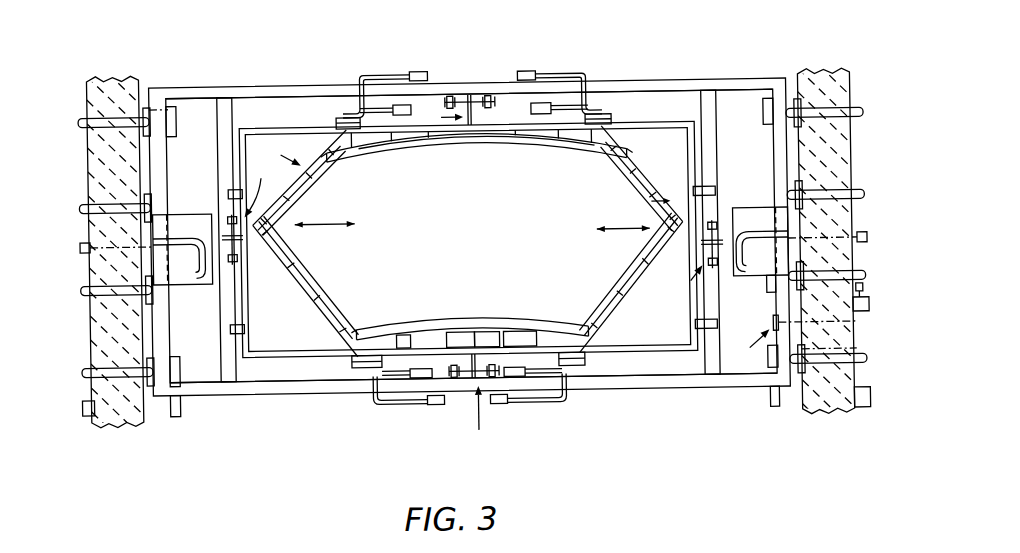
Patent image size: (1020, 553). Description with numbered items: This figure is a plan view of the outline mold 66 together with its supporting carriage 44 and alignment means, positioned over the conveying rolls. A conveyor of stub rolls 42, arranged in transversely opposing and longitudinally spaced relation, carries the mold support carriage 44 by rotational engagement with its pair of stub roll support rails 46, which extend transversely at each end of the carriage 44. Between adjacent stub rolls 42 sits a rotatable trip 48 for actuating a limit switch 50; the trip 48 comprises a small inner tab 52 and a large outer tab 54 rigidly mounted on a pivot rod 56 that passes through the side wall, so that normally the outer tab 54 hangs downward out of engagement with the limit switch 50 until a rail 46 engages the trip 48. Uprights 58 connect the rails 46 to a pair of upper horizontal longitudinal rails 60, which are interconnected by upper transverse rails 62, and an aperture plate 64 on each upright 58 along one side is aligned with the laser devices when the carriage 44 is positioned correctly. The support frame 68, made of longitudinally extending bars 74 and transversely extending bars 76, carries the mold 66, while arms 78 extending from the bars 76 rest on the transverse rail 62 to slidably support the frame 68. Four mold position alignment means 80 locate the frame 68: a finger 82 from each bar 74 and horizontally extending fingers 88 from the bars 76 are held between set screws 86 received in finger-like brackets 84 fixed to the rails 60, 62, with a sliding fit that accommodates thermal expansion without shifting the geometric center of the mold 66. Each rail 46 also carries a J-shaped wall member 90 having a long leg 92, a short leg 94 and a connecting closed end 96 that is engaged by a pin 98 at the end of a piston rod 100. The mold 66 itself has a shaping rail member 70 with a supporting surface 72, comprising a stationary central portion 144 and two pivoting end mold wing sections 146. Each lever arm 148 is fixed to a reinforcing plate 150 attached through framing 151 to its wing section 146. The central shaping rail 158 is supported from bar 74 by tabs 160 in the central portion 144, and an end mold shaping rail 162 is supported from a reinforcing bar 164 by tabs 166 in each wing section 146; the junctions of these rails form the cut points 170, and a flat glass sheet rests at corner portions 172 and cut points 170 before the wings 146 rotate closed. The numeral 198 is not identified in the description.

The stub rolls 42 is at (176, 112).
The mold support carriage 44 is at (673, 83).
The stub roll support rails 46 is at (167, 163).
The rotatable trip 48 is at (750, 344).
The limit switch 50 is at (866, 294).
The small inner tab 52 is at (772, 322).
The large outer tab 54 is at (870, 313).
The pivot rod 56 is at (856, 352).
The uprights 58 is at (166, 86).
The upper horizontal longitudinal rails 60 is at (248, 83).
The upper transverse rails 62 is at (236, 360).
The aperture plate 64 is at (180, 412).
The outline mold 66 is at (280, 152).
The support frame 68 is at (259, 347).
The shaping rail member 70 is at (383, 153).
The supporting surface 72 is at (415, 145).
The longitudinally extending bars 74 is at (283, 126).
The transversely extending bars 76 is at (219, 169).
The arms 78 is at (229, 191).
The mold position alignment means 80 is at (474, 278).
The finger 82 is at (478, 124).
The finger-like brackets 84 is at (470, 95).
The set screws 86 is at (452, 96).
The horizontally extending fingers 88 is at (236, 250).
The J-shaped wall member 90 is at (757, 217).
The long leg 92 is at (180, 234).
The short leg 94 is at (182, 282).
The connecting closed end 96 is at (204, 286).
The pin 98 is at (100, 258).
The piston rod 100 is at (86, 240).
The stationary central portion 144 is at (544, 147).
The pivoting end mold wing sections 146 is at (312, 280).
The lever arm 148 is at (370, 104).
The reinforcing plate 150 is at (343, 114).
The framing 151 is at (331, 118).
The central shaping rail 158 is at (548, 320).
The tabs 160 is at (398, 334).
The end mold shaping rail 162 is at (634, 171).
The reinforcing bar 164 is at (645, 156).
The tabs 166 is at (646, 203).
The cut point 170 is at (338, 152).
The corner portions 172 is at (275, 232).
The actuator cylinder 198 is at (390, 70).